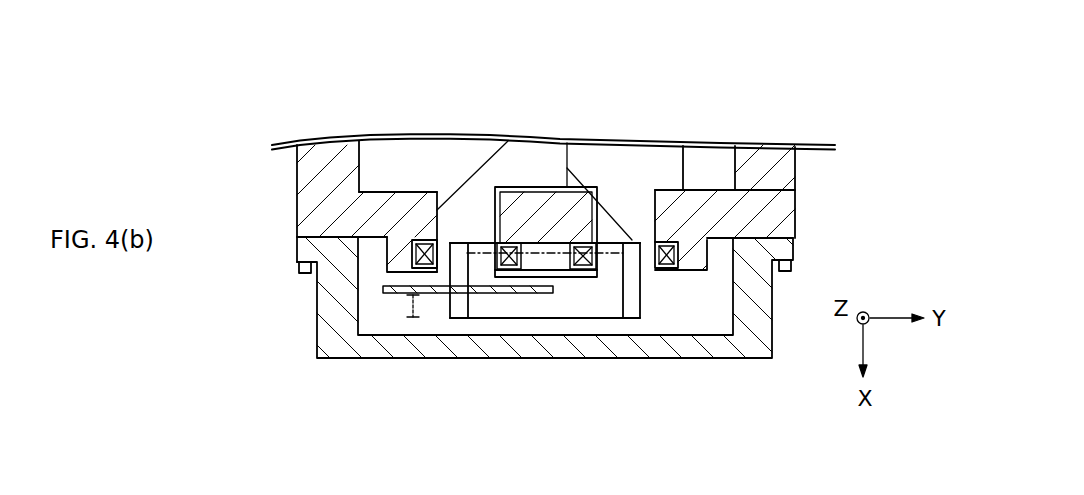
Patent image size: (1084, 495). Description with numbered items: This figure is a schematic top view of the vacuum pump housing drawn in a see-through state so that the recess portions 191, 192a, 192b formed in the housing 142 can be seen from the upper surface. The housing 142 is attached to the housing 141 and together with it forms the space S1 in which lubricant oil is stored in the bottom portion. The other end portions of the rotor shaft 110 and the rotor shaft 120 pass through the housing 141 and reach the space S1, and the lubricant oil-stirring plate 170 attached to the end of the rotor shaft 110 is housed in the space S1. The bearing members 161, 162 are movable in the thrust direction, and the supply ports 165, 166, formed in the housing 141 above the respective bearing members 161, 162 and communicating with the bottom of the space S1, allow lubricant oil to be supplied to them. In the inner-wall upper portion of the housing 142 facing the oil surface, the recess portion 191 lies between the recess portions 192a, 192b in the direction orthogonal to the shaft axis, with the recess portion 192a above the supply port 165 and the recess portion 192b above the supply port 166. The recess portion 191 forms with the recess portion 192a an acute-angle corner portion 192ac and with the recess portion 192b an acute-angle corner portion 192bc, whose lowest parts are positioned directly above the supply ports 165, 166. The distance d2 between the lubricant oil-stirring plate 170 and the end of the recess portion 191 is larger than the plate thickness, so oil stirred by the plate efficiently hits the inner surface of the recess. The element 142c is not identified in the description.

The rotor shaft 110 is at (453, 208).
The rotor shaft 120 is at (643, 212).
The housing 141 is at (308, 222).
The housing 142 is at (422, 348).
The base connecting portion 142c is at (543, 237).
The bearing member 161 is at (413, 256).
The bearing member 162 is at (680, 275).
The supply port 165 is at (474, 238).
The supply port 166 is at (622, 238).
The lubricant oil-stirring plate 170 is at (387, 297).
The recess portion 191 is at (557, 240).
The recess portion 192a is at (462, 320).
The corner portion 192ac is at (470, 307).
The recess portion 192b is at (627, 320).
The corner portion 192bc is at (617, 305).
The space S1 is at (712, 305).
The distance d2 is at (405, 317).